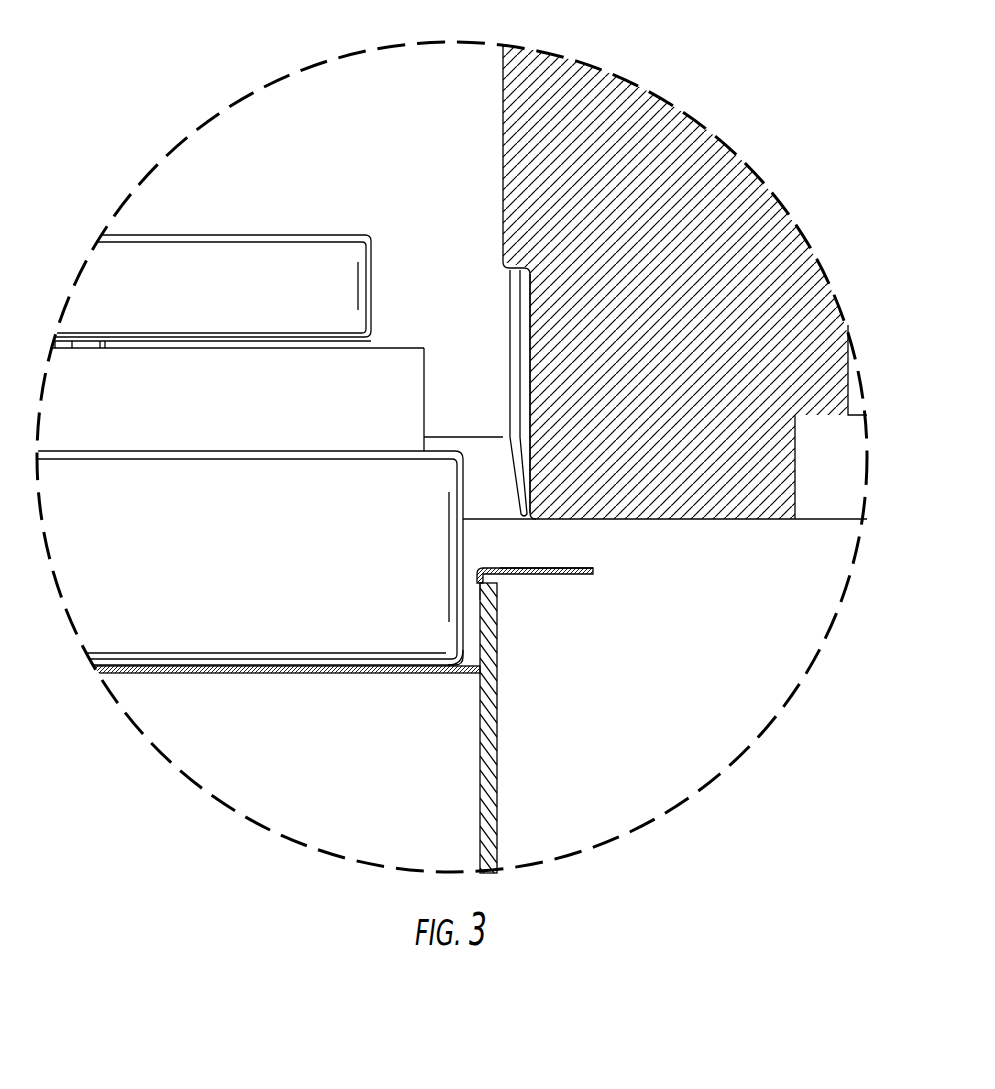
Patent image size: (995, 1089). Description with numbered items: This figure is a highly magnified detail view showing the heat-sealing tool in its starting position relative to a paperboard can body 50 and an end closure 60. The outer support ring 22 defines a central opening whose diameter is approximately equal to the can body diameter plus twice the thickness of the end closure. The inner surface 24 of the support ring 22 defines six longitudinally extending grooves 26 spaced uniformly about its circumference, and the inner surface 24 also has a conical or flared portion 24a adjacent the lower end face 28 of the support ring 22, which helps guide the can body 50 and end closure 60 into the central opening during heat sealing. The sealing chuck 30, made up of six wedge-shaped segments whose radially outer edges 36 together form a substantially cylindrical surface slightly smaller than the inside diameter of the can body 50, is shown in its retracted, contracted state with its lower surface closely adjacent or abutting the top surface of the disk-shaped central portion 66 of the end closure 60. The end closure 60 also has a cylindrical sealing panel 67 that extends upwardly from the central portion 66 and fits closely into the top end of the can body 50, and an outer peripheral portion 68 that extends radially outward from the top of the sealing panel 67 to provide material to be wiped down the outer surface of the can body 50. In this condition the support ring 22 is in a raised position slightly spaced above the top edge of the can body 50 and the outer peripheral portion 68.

The outer support ring 22 is at (645, 135).
The inner surface 24 is at (503, 152).
The conical or flared portion 24a is at (513, 494).
The longitudinally extending grooves 26 is at (520, 387).
The lower end face 28 is at (676, 520).
The sealing chuck 30 is at (475, 641).
The radially outer edge 36 is at (466, 650).
The can body 50 is at (497, 786).
The end closure 60 is at (594, 571).
The central portion 66 is at (283, 680).
The sealing panel 67 is at (480, 594).
The outer peripheral portion 68 is at (550, 574).